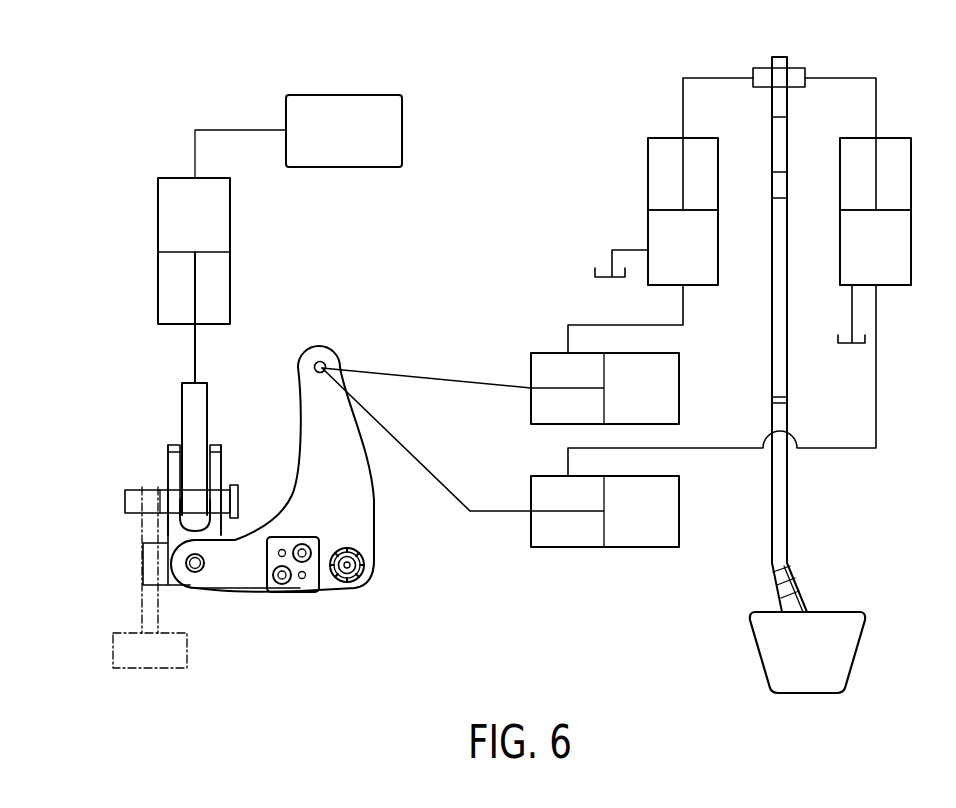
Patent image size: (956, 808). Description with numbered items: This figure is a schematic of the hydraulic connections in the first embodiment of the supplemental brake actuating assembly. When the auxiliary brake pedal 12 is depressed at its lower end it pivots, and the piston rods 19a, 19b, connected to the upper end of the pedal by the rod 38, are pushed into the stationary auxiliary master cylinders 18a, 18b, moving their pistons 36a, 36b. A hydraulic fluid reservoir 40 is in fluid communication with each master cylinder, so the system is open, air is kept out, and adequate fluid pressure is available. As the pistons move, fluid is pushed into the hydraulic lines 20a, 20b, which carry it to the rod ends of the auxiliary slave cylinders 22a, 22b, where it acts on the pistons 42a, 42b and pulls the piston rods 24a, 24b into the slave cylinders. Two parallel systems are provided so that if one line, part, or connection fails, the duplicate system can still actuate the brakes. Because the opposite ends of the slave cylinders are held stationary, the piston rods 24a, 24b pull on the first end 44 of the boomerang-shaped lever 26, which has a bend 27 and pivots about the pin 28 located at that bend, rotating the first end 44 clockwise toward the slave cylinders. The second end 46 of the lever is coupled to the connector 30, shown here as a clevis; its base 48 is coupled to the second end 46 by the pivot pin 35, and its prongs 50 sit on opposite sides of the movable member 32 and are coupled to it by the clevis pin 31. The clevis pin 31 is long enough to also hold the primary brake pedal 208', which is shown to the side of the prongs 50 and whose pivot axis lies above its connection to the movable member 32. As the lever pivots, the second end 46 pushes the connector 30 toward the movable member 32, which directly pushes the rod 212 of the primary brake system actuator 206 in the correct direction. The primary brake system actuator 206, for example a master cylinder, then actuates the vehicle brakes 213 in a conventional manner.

The auxiliary brake pedal 12 is at (780, 535).
The first auxiliary master cylinder 18a is at (912, 185).
The second auxiliary master cylinder 18b is at (648, 185).
The piston rod of first auxiliary master cylinder 19a is at (876, 107).
The piston rod of second auxiliary master cylinder 19b is at (683, 110).
The first hydraulic line 20a is at (715, 450).
The second hydraulic line 20b is at (672, 325).
The first auxiliary slave cylinder 22a is at (645, 548).
The second auxiliary slave cylinder 22b is at (647, 425).
The piston rod of first auxiliary slave cylinder 24a is at (503, 512).
The piston rod of second auxiliary slave cylinder 24b is at (497, 388).
The lever 26 is at (348, 520).
The bend 27 is at (379, 583).
The pin 28 is at (346, 572).
The connector 30 is at (160, 472).
The clevis pin 31 is at (233, 500).
The movable member 32 is at (197, 425).
The pivot pin 35 is at (204, 563).
The piston of first auxiliary master cylinder 36a is at (858, 212).
The piston of second auxiliary master cylinder 36b is at (665, 212).
The rod 38 is at (790, 66).
The hydraulic fluid reservoir 40 is at (600, 280).
The piston of first auxiliary slave cylinder 42a is at (607, 530).
The piston of second auxiliary slave cylinder 42b is at (607, 408).
The first end of lever 44 is at (321, 334).
The second end of lever 46 is at (199, 598).
The base of clevis 48 is at (163, 565).
The prongs of clevis 50 is at (168, 455).
The primary brake system actuator 206 is at (232, 218).
The primary brake pedal 208' is at (150, 606).
The rod of primary brake system actuator 212 is at (195, 350).
The vehicle brakes 213 is at (404, 128).